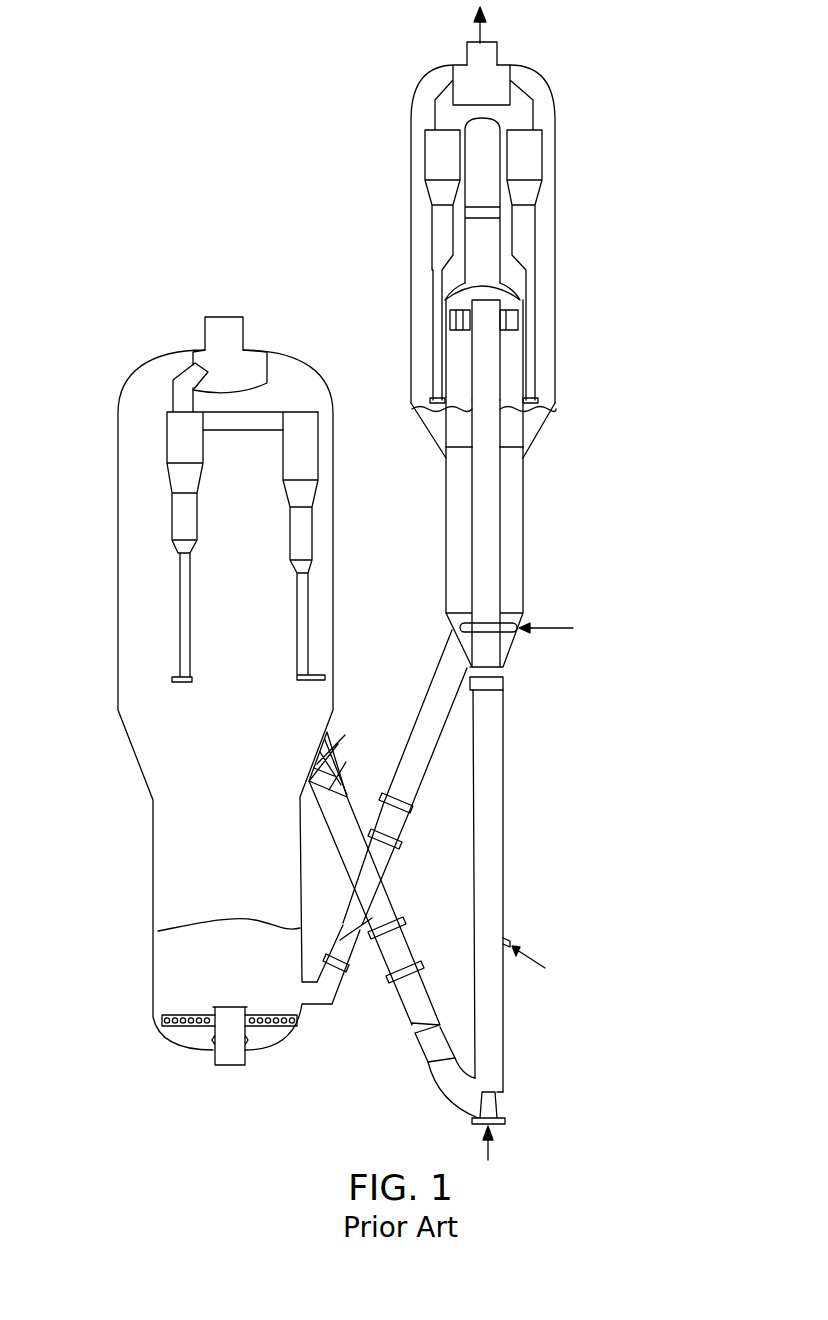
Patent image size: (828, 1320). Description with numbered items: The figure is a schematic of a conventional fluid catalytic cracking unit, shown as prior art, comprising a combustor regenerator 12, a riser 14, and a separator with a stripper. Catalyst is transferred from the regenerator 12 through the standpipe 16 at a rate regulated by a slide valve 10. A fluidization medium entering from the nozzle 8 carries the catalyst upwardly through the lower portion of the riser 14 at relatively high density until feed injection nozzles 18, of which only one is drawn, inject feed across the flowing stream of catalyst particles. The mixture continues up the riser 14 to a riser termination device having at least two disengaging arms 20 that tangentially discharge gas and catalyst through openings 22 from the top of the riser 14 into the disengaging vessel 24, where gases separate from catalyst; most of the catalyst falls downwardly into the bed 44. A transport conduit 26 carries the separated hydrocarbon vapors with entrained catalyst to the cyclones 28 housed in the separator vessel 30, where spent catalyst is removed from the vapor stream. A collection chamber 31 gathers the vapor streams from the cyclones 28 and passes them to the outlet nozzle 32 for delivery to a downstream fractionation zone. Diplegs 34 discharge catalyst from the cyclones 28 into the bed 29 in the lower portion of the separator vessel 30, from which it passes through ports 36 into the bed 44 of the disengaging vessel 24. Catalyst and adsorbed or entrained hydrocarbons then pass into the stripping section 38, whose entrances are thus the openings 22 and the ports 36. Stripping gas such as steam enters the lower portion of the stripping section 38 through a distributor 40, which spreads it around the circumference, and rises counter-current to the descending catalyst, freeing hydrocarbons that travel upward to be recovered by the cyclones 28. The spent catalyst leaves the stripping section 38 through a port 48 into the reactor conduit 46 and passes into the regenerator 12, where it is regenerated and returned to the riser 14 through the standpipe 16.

The nozzle 8 is at (492, 1100).
The slide valve 10 is at (440, 1043).
The regenerator 12 is at (128, 481).
The riser 14 is at (507, 717).
The standpipe 16 is at (383, 908).
The feed injection nozzles 18 is at (507, 938).
The disengaging arms 20 is at (455, 290).
The openings 22 is at (463, 325).
The disengaging vessel 24 is at (517, 367).
The transport conduit 26 is at (485, 253).
The cyclones 28 is at (438, 197).
The bed 29 is at (437, 435).
The separator vessel 30 is at (552, 178).
The collection chamber 31 is at (507, 70).
The outlet nozzle 32 is at (490, 50).
The diplegs 34 is at (450, 323).
The ports 36 is at (447, 440).
The stripping section 38 is at (527, 493).
The distributor 40 is at (505, 633).
The bed 44 is at (513, 428).
The reactor conduit 46 is at (423, 728).
The port 48 is at (457, 663).